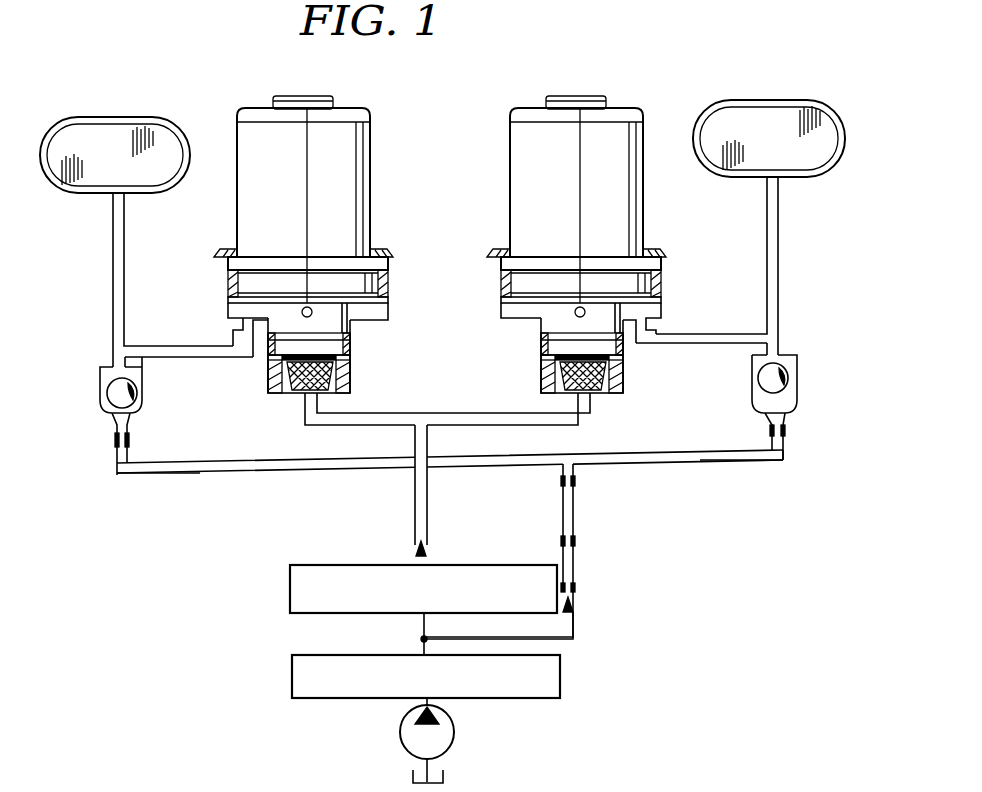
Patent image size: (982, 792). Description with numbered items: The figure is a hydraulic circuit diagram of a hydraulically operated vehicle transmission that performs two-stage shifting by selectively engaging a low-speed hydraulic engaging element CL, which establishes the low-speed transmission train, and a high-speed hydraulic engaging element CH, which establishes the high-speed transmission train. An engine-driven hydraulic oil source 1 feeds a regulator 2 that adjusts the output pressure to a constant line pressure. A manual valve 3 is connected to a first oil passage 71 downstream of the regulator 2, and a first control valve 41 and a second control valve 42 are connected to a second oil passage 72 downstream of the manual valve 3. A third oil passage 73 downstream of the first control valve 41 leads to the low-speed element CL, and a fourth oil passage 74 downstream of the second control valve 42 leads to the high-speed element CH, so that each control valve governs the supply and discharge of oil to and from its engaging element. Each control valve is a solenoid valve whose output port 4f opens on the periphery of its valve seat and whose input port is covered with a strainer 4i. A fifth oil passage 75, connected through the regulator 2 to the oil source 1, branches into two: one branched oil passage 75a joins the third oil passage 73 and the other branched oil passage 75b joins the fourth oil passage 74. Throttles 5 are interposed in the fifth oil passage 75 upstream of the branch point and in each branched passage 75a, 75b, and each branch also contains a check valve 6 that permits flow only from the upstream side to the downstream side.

The hydraulic oil source 1 is at (454, 727).
The regulator 2 is at (340, 632).
The manual valve 3 is at (323, 565).
The first control valve 41 is at (343, 202).
The second control valve 42 is at (617, 200).
The output port 4f is at (312, 314).
The strainer 4i is at (352, 378).
The throttle 5 is at (130, 440).
The check valve 6 is at (135, 388).
The first oil passage 71 is at (423, 626).
The second oil passage 72 is at (443, 413).
The third oil passage 73 is at (125, 300).
The fourth oil passage 74 is at (778, 263).
The fifth oil passage 75 is at (563, 514).
The branched oil passage 75a is at (180, 475).
The branched oil passage 75b is at (753, 462).
The low-speed hydraulic engaging element CL is at (168, 136).
The high-speed hydraulic engaging element CH is at (757, 114).